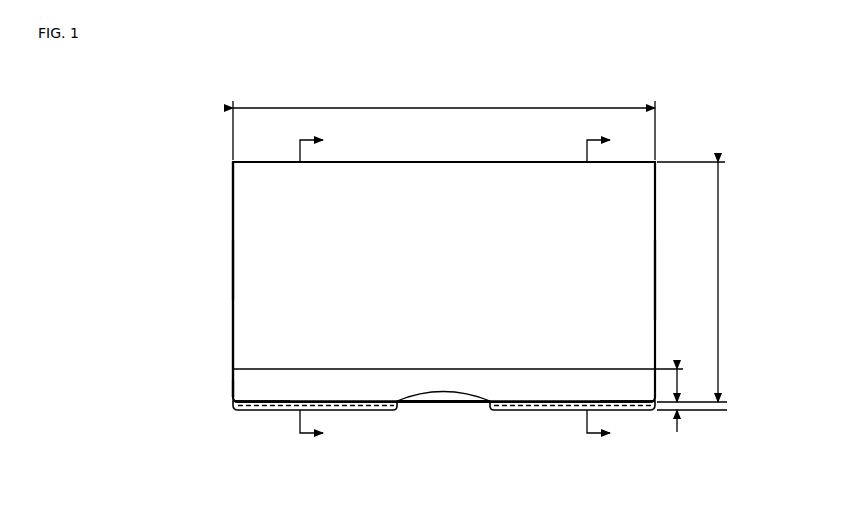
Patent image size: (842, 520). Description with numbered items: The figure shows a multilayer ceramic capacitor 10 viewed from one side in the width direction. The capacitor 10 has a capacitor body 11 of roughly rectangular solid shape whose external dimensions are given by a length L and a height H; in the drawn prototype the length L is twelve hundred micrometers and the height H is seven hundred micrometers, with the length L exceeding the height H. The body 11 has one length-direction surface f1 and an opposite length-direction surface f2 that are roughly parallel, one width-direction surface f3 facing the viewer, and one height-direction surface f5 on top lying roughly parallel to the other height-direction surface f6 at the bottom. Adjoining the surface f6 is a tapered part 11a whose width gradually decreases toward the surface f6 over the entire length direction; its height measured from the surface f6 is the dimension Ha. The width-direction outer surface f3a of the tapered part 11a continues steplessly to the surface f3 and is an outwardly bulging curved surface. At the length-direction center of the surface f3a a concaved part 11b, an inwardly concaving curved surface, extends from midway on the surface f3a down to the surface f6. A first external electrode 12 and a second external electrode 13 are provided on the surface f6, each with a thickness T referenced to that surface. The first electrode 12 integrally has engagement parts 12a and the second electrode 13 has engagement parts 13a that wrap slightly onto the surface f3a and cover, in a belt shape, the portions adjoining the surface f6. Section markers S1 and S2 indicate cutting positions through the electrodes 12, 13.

The multilayer ceramic capacitor 10 is at (226, 186).
The capacitor body 11 is at (233, 246).
The tapered part 11a is at (245, 385).
The concaved part 11b is at (425, 403).
The first external electrode 12 is at (335, 410).
The engagement parts 12a is at (268, 404).
The second external electrode 13 is at (548, 410).
The engagement parts 13a is at (620, 404).
The one length-direction surface f1 is at (233, 283).
The other length-direction surface f2 is at (655, 282).
The one width-direction surface f3 is at (265, 318).
The one width-direction outer surface f3a is at (275, 378).
The one height-direction surface f5 is at (464, 162).
The other height-direction surface f6 is at (467, 394).
The length L is at (444, 125).
The height H is at (695, 286).
The height-direction dimension of the tapered part Ha is at (690, 385).
The thickness of the external electrodes T is at (685, 425).
The section line S1 is at (305, 289).
The section line S2 is at (592, 289).